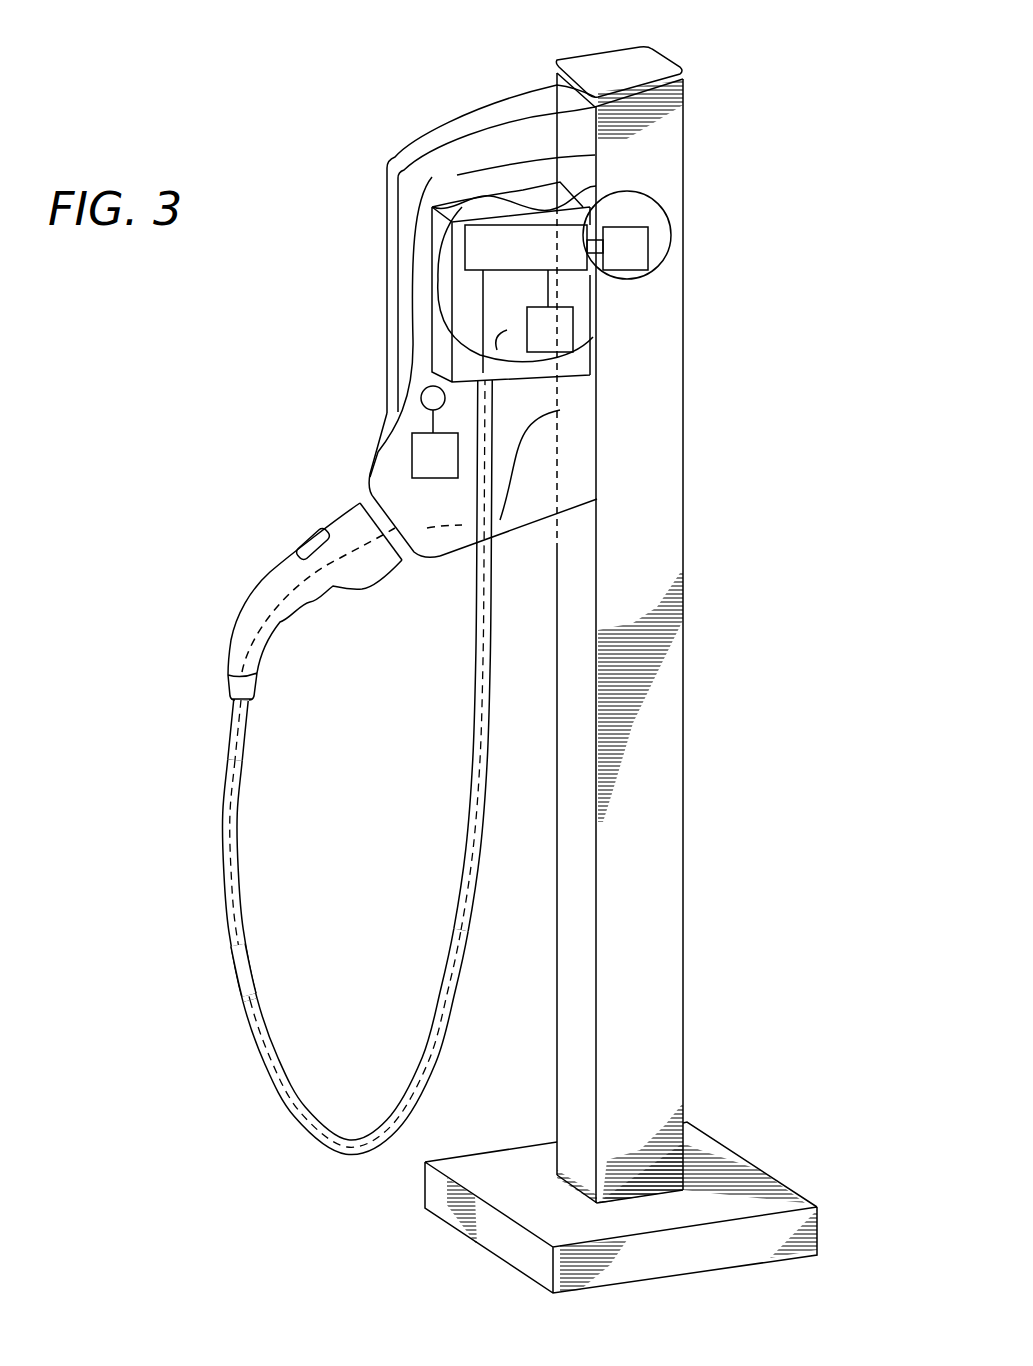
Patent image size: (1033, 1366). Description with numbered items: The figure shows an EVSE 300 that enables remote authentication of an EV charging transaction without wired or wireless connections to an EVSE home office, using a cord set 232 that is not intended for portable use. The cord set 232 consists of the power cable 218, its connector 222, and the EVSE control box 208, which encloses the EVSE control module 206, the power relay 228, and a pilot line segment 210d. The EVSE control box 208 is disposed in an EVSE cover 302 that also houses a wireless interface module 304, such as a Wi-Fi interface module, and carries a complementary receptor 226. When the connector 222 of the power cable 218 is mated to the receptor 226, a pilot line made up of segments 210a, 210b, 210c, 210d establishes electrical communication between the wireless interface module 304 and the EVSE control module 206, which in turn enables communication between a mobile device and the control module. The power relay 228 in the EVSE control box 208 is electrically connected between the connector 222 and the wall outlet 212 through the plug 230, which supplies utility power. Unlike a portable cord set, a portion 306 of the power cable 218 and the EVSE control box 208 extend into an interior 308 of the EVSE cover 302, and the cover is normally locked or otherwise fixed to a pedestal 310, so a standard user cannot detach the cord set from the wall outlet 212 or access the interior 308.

The EVSE 300 is at (199, 371).
The pedestal 310 is at (647, 62).
The EVSE cover 302 is at (376, 200).
The interior 308 is at (446, 186).
The EVSE control box 208 is at (494, 193).
The power relay 228 is at (483, 246).
The plug 230 is at (620, 195).
The wall outlet 212 is at (622, 282).
The EVSE control module 206 is at (562, 327).
The pilot line segment 210d is at (505, 330).
The portion of the power cable 306 is at (493, 413).
The wireless interface module 304 is at (422, 452).
The receptor 226 is at (373, 494).
The connector 222 is at (278, 568).
The pilot line segment 210a is at (480, 523).
The pilot line segment 210b is at (265, 623).
The pilot line segment 210c is at (223, 832).
The cord set 232 is at (226, 985).
The power cable 218 is at (262, 1062).